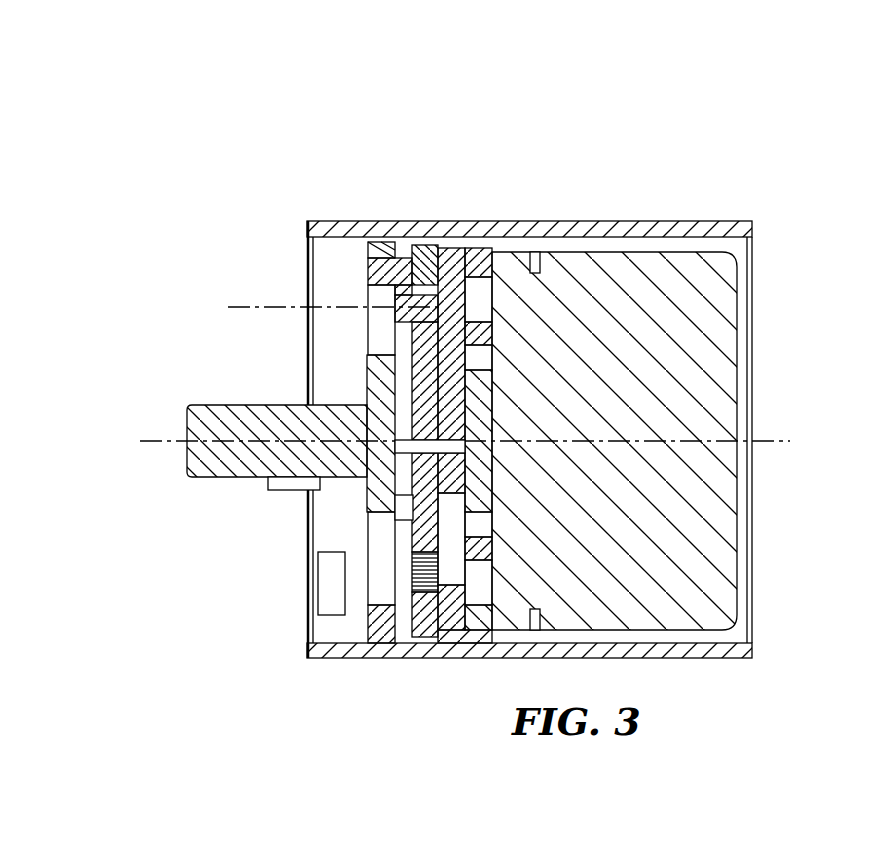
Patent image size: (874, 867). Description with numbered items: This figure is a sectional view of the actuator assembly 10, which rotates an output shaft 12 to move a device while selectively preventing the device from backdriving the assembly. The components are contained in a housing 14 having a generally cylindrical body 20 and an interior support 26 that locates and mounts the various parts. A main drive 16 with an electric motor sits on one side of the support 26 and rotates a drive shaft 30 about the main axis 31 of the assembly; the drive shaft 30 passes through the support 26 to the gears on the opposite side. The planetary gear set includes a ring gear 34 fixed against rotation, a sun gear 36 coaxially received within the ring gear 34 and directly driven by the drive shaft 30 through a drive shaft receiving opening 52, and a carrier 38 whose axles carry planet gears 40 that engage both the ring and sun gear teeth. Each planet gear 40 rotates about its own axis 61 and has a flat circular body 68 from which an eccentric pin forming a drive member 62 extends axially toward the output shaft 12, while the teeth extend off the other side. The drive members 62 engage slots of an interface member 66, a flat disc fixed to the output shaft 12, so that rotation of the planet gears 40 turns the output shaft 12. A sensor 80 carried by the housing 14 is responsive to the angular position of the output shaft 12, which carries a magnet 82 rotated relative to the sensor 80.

The actuator assembly 10 is at (559, 413).
The output shaft 12 is at (283, 441).
The housing 14 is at (456, 401).
The main drive 16 is at (708, 542).
The cylindrical body 20 is at (709, 652).
The interior support 26 is at (470, 244).
The drive shaft 30 is at (440, 446).
The main axis 31 is at (170, 447).
The ring gear 34 is at (422, 640).
The sun gear 36 is at (440, 505).
The carrier 38 is at (455, 340).
The planet gear 40 is at (412, 268).
The drive shaft receiving opening 52 is at (413, 447).
The planet gear axis 61 is at (261, 303).
The drive member 62 is at (368, 270).
The interface member 66 is at (372, 632).
The circular body 68 is at (405, 335).
The sensor 80 is at (326, 600).
The magnet 82 is at (268, 486).